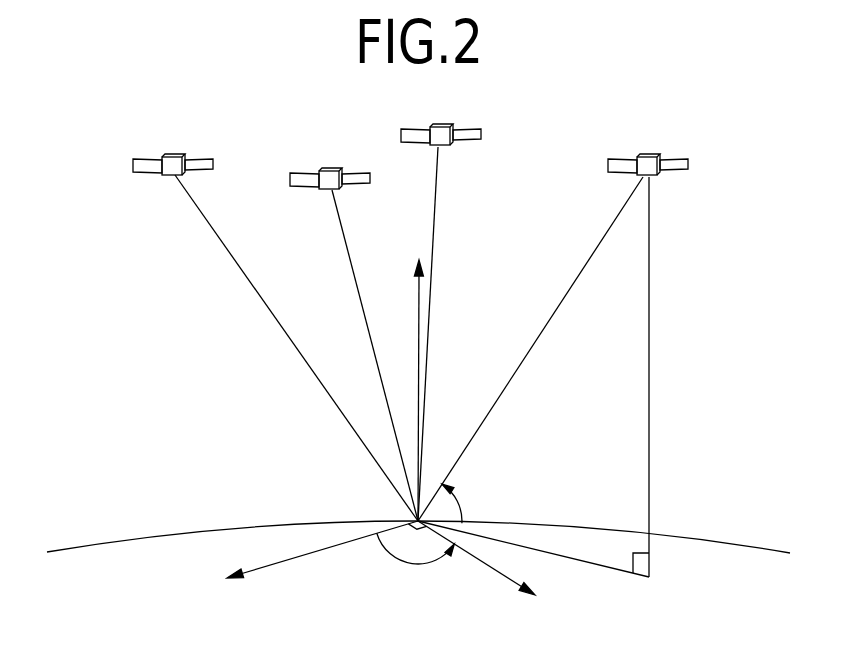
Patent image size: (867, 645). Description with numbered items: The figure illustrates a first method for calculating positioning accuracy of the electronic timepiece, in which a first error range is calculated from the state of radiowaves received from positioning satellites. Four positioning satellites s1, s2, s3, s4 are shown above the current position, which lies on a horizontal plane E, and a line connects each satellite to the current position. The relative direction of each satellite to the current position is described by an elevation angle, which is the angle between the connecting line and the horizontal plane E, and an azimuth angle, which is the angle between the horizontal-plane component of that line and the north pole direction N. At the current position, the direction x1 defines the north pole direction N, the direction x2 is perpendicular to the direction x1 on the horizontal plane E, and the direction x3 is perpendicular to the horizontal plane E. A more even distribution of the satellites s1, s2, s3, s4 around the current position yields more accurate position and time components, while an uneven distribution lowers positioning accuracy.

The horizontal plane E is at (407, 538).
The positioning satellite s1 is at (649, 155).
The positioning satellite s2 is at (443, 125).
The positioning satellite s3 is at (333, 169).
The positioning satellite s4 is at (176, 155).
The direction x1 is at (299, 558).
The direction x2 is at (490, 571).
The direction x3 is at (417, 376).